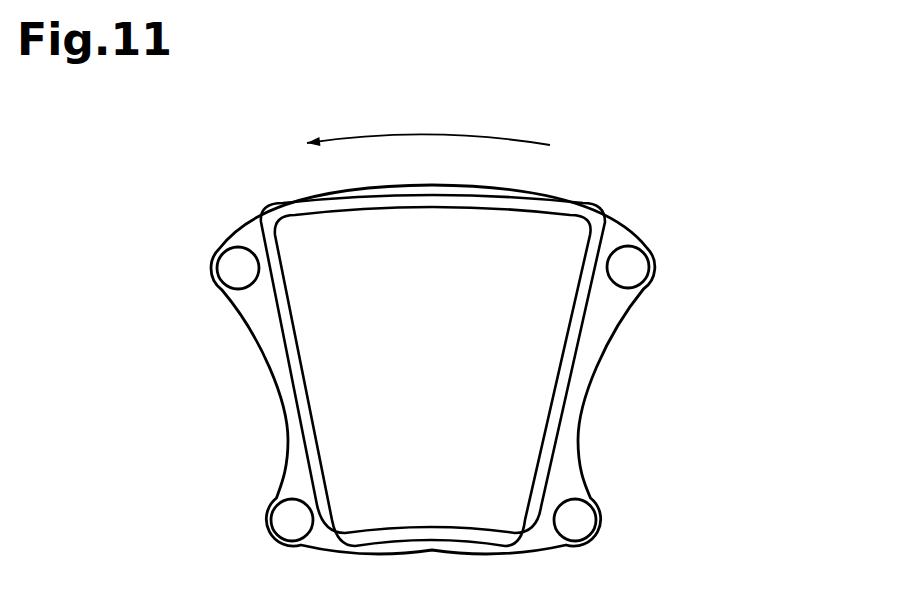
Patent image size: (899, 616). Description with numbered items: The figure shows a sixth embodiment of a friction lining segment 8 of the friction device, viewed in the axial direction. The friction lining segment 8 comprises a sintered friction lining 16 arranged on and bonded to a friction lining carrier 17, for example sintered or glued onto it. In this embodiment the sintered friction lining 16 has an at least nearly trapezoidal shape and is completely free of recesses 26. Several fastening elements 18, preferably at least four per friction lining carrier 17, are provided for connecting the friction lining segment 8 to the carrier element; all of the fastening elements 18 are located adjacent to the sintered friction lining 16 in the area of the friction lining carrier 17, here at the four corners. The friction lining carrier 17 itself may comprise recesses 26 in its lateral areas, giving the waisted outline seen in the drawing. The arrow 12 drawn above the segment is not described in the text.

The friction lining segment 8 is at (758, 103).
The direction of movement 12 is at (427, 135).
The sintered friction lining 16 is at (320, 247).
The friction lining carrier 17 is at (590, 383).
The fastening elements 18 is at (235, 238).
The recess 26 is at (265, 383).